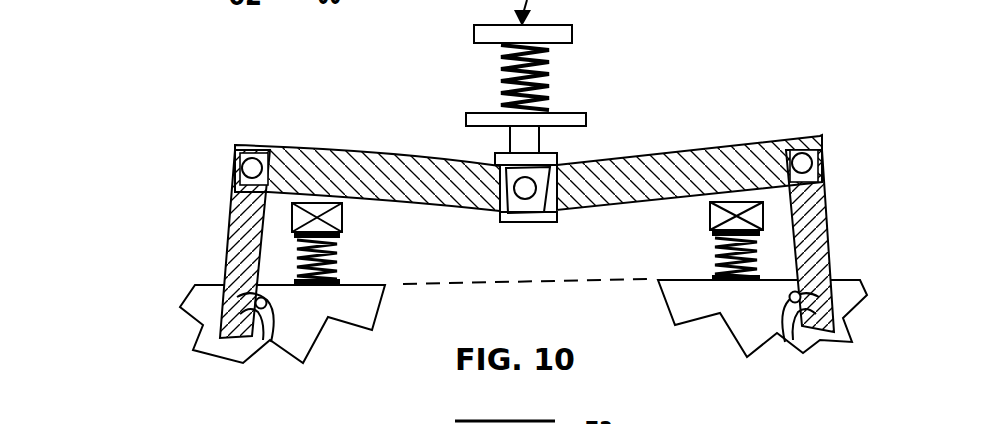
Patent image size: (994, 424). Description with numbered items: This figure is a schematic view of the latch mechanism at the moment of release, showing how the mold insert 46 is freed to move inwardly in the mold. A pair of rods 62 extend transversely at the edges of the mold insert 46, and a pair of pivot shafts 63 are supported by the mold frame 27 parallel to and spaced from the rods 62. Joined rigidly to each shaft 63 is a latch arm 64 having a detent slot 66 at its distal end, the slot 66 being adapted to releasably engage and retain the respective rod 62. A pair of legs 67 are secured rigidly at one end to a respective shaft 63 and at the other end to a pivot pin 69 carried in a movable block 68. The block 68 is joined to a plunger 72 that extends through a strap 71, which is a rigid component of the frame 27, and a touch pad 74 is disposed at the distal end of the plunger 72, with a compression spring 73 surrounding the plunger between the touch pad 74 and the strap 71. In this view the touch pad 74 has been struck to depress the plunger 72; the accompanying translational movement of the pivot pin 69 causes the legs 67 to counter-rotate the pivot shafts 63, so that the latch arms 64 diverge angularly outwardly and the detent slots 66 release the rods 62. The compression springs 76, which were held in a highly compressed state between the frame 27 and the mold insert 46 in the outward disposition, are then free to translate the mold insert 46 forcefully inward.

The mold frame 27 is at (327, 203).
The mold insert 46 is at (357, 313).
The rod 62 is at (262, 309).
The pivot shaft 63 is at (255, 167).
The latch arm 64 is at (230, 205).
The detent slot 66 is at (270, 343).
The leg 67 is at (398, 160).
The movable block 68 is at (557, 221).
The pivot pin 69 is at (525, 188).
The strap 71 is at (585, 115).
The plunger 72 is at (500, 75).
The compression spring 73 is at (548, 60).
The touch pad 74 is at (512, 25).
The compression spring 76 is at (342, 258).